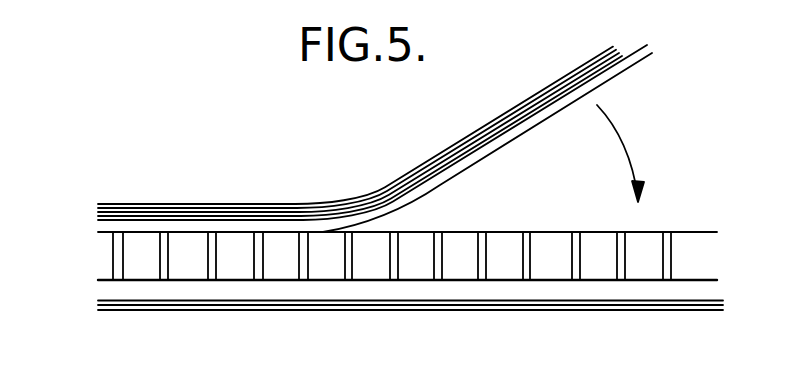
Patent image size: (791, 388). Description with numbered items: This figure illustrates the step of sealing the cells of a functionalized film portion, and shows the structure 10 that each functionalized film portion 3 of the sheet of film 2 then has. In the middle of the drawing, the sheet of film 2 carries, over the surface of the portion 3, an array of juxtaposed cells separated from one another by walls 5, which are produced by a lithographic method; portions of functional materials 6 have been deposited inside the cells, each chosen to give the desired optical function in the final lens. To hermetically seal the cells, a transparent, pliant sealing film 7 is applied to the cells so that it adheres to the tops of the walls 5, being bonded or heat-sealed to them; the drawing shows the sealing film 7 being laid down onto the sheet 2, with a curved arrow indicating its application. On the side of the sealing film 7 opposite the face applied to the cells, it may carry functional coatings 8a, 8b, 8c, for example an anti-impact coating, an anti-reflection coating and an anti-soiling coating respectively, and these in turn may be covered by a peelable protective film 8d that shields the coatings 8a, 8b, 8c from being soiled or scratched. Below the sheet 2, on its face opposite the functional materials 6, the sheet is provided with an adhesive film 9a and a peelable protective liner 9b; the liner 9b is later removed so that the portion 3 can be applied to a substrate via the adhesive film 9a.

The sheet of film 2 is at (416, 302).
The film portion 3 is at (416, 302).
The walls 5 is at (395, 272).
The portions of functional materials 6 is at (463, 265).
The sealing film 7 is at (642, 55).
The functional coating 8a is at (170, 218).
The functional coating 8b is at (213, 217).
The functional coating 8c is at (257, 208).
The peelable protective film 8d is at (120, 207).
The adhesive film 9a is at (155, 303).
The peelable liner 9b is at (240, 308).
The structure of the functionalized film portion 10 is at (391, 208).